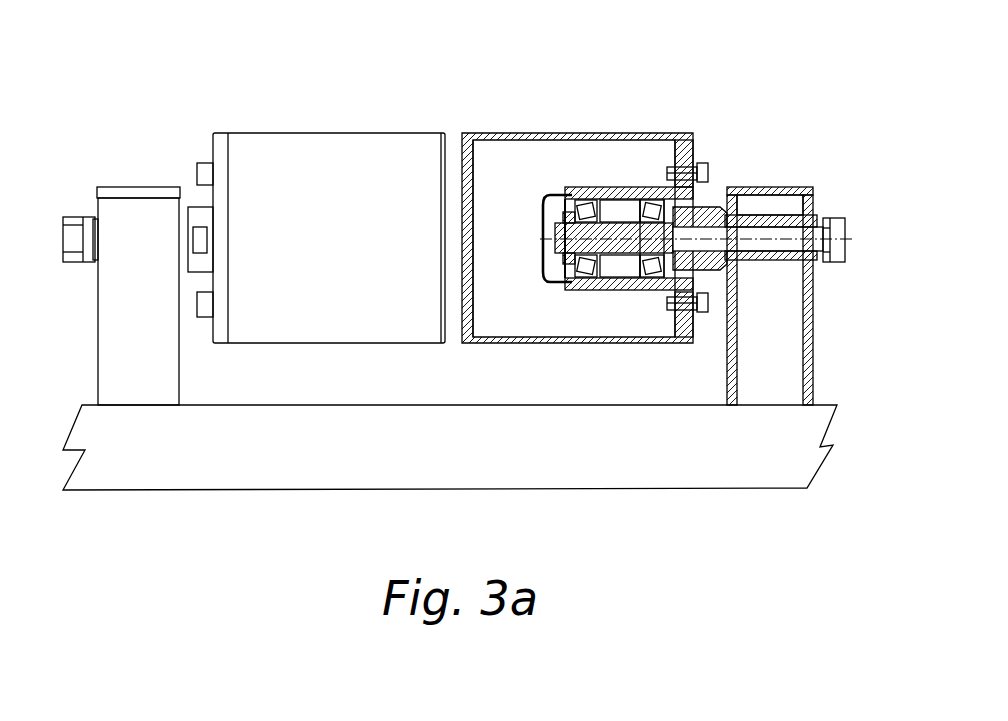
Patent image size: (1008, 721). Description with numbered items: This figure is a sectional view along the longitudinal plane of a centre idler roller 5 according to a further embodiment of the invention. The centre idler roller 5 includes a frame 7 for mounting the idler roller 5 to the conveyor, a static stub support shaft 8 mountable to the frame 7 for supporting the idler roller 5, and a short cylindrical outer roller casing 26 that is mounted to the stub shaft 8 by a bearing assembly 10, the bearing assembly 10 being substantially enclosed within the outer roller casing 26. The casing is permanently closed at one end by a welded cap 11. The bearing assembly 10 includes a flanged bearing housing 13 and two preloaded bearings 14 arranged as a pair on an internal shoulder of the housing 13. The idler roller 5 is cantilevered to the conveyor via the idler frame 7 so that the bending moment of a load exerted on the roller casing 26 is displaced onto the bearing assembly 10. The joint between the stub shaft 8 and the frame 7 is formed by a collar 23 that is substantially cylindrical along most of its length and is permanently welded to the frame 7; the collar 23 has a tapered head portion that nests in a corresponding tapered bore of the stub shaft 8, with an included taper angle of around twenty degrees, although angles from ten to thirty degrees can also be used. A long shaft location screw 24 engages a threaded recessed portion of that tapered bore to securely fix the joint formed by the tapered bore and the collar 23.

The centre idler roller 5 is at (342, 108).
The frame 7 is at (112, 202).
The static stub support shaft 8 is at (608, 187).
The bearing assembly 10 is at (587, 292).
The welded cap 11 is at (462, 150).
The flanged bearing housing 13 is at (623, 193).
The preloaded bearings 14 is at (585, 196).
The collar 23 is at (758, 187).
The shaft location screw 24 is at (833, 216).
The outer roller casing 26 is at (505, 133).